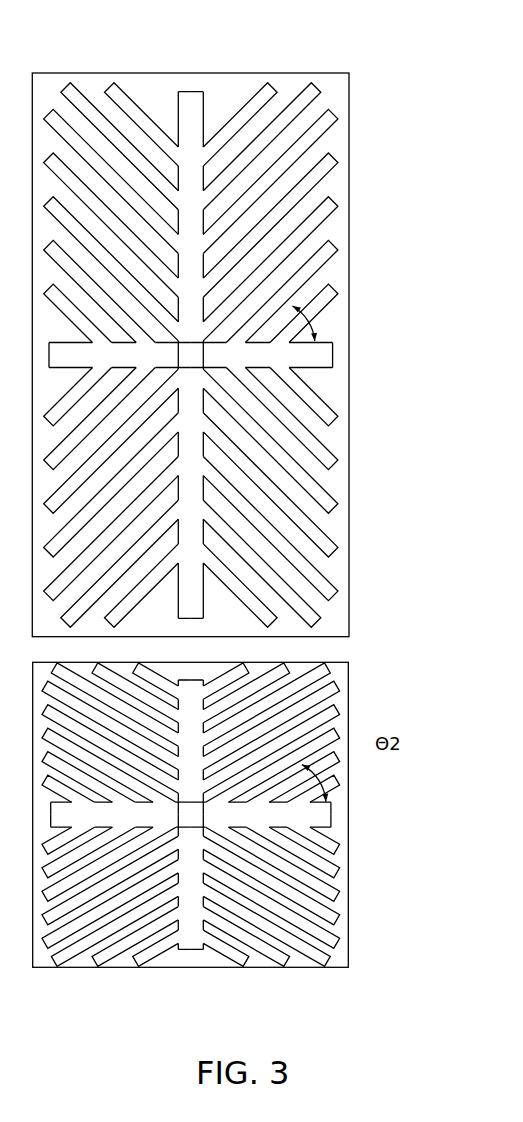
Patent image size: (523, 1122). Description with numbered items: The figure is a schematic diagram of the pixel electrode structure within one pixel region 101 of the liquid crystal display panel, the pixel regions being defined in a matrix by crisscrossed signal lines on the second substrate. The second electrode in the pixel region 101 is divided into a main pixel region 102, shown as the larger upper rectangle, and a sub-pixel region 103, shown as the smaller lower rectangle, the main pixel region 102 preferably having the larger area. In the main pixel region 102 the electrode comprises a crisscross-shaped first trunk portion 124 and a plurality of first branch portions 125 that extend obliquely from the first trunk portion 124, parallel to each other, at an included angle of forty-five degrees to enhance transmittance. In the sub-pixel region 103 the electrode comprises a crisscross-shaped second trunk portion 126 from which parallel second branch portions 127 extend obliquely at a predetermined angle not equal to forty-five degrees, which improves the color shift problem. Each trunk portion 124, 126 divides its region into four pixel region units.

The pixel region 101 is at (365, 182).
The main pixel region 102 is at (349, 233).
The sub-pixel region 103 is at (349, 888).
The first trunk portion 124 is at (209, 100).
The first branch portions 125 is at (332, 114).
The second trunk portion 126 is at (334, 815).
The second branch portions 127 is at (342, 691).